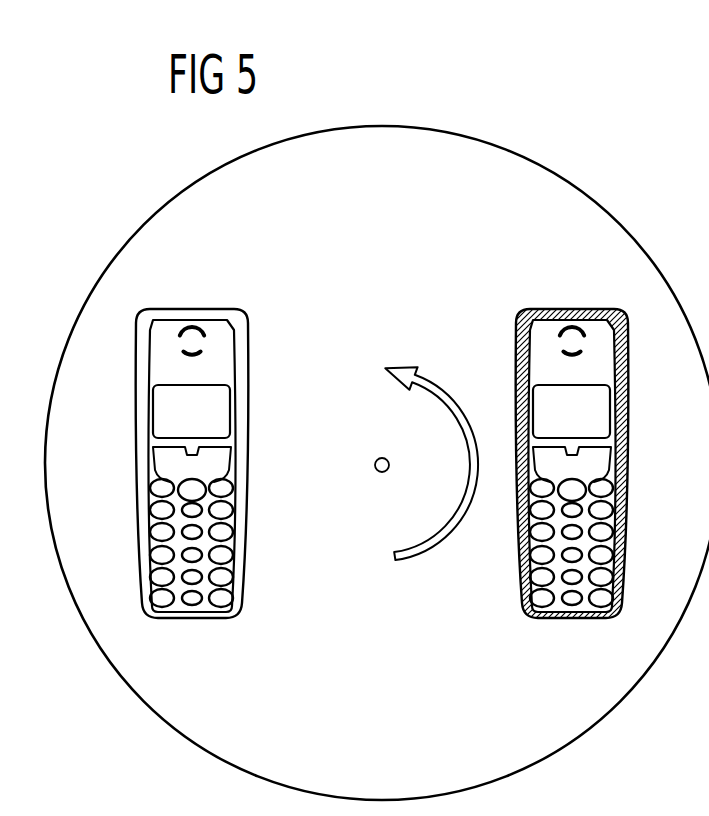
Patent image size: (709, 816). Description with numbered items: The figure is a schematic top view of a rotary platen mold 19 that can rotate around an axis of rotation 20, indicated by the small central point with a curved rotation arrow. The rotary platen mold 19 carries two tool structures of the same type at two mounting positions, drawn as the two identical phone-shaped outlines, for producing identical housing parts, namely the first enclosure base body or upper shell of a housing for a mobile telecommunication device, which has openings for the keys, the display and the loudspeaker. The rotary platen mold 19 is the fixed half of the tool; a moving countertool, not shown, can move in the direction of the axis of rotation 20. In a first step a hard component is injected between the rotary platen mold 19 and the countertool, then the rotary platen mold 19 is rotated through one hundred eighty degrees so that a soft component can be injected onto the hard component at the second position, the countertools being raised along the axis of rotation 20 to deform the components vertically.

The rotary platen mold 19 is at (587, 247).
The axis of rotation 20 is at (377, 471).